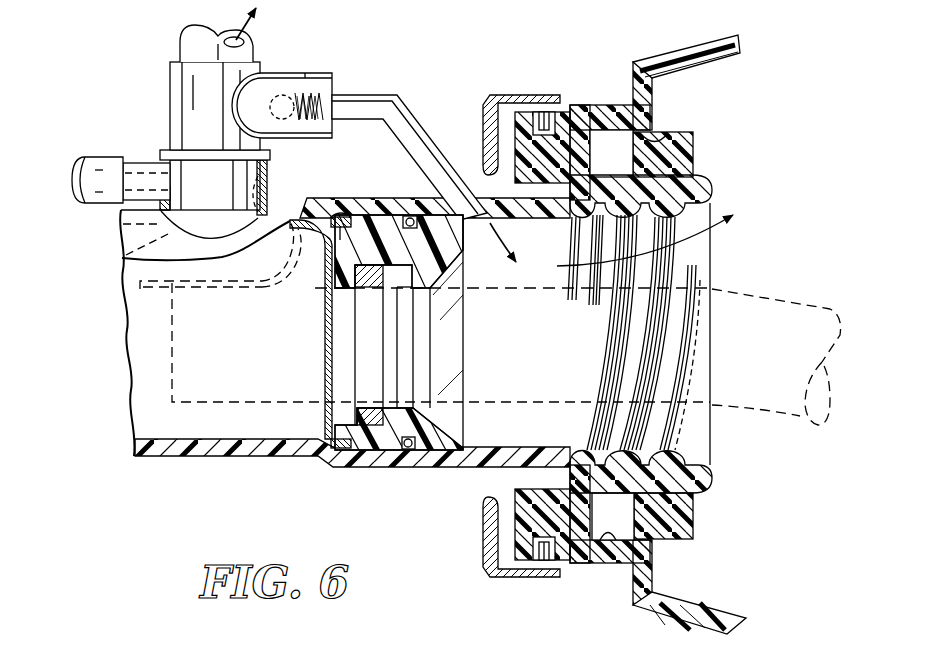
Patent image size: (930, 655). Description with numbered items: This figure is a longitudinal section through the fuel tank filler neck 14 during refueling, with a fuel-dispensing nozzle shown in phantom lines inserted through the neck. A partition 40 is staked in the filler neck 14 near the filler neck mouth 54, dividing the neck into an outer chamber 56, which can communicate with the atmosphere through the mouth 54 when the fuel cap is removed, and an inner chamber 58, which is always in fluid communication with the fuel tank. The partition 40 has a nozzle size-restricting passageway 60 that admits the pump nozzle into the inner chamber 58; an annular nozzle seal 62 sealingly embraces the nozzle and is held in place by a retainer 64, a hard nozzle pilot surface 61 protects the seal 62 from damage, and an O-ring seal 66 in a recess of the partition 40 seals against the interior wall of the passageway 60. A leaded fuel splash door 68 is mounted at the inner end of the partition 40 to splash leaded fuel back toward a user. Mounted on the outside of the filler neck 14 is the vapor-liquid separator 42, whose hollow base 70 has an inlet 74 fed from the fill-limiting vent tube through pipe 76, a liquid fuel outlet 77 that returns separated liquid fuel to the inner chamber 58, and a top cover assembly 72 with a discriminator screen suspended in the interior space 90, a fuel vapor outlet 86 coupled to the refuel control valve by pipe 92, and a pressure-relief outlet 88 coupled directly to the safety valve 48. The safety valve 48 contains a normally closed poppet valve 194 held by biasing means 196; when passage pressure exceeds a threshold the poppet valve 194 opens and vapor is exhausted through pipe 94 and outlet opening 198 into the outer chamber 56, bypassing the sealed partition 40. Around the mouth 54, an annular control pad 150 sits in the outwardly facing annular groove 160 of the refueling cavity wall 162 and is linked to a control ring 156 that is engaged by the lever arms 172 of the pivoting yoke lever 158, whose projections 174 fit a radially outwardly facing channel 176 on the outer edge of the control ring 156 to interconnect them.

The filler neck 14 is at (136, 443).
The partition 40 is at (442, 445).
The vapor-liquid separator 42 is at (107, 132).
The safety valve 48 is at (323, 66).
The filler neck mouth 54 is at (702, 470).
The outer chamber 56 is at (508, 434).
The inner chamber 58 is at (196, 416).
The nozzle size-restricting passageway 60 is at (447, 412).
The hard nozzle pilot surface 61 is at (447, 266).
The annular nozzle seal 62 is at (400, 296).
The retainer 64 is at (371, 426).
The O-ring seal 66 is at (409, 215).
The leaded fuel splash door 68 is at (145, 276).
The hollow base 70 is at (237, 203).
The top cover assembly 72 is at (170, 112).
The inlet 74 is at (141, 176).
The pipe 76 is at (95, 188).
The liquid fuel outlet 77 is at (268, 196).
The fuel vapor outlet 86 is at (194, 77).
The pressure-relief outlet 88 is at (326, 86).
The interior space 90 is at (124, 253).
The pipe 92 is at (247, 52).
The pipe 94 is at (397, 101).
The annular control pad 150 is at (692, 142).
The control ring 156 is at (561, 113).
The pivoting yoke lever 158 is at (486, 80).
The annular groove 160 is at (660, 134).
The refueling cavity wall 162 is at (700, 66).
The lever arms 172 is at (481, 125).
The projections 174 is at (541, 118).
The channel 176 is at (521, 118).
The poppet valve 194 is at (289, 126).
The biasing means 196 is at (324, 128).
The outlet opening 198 is at (490, 218).